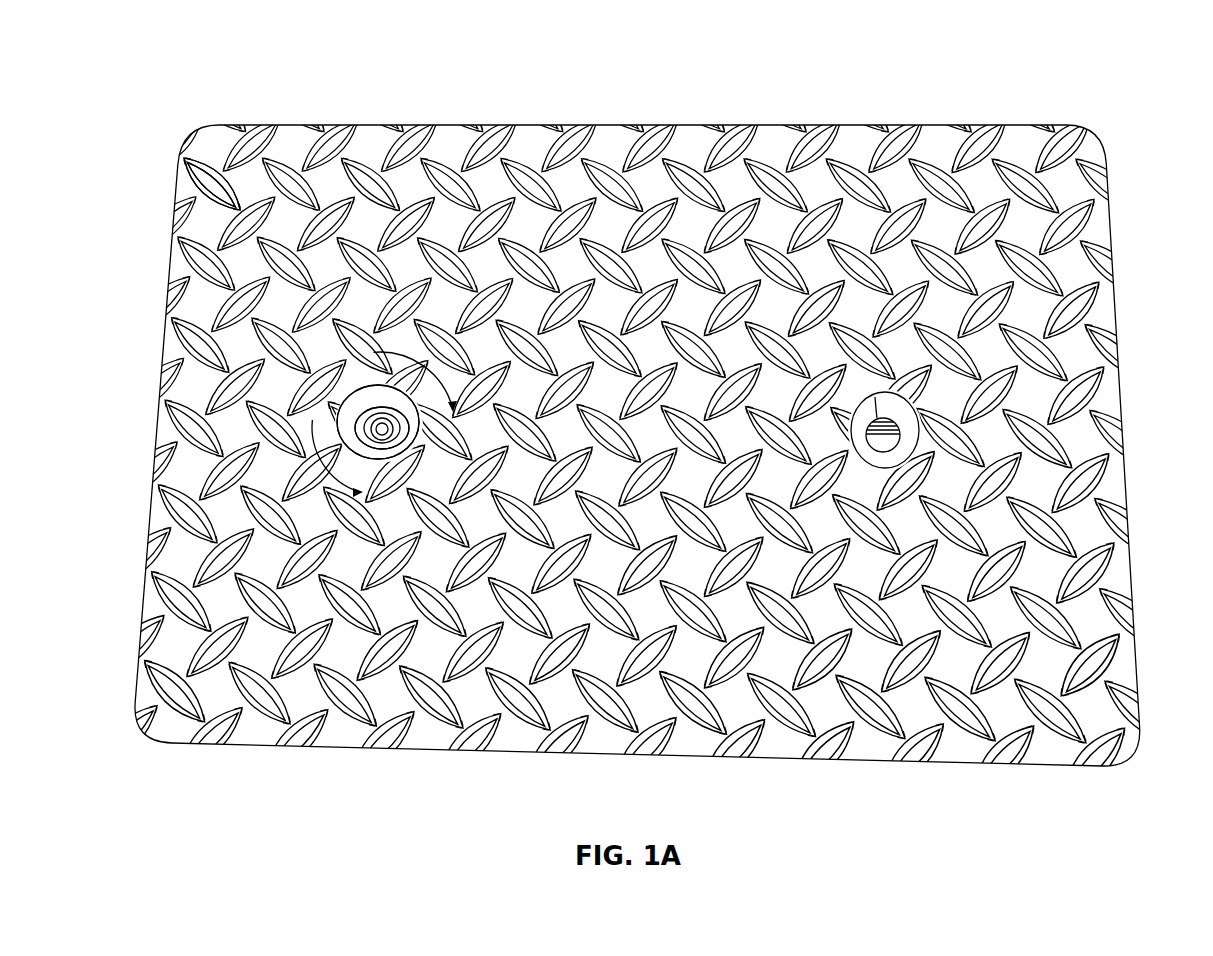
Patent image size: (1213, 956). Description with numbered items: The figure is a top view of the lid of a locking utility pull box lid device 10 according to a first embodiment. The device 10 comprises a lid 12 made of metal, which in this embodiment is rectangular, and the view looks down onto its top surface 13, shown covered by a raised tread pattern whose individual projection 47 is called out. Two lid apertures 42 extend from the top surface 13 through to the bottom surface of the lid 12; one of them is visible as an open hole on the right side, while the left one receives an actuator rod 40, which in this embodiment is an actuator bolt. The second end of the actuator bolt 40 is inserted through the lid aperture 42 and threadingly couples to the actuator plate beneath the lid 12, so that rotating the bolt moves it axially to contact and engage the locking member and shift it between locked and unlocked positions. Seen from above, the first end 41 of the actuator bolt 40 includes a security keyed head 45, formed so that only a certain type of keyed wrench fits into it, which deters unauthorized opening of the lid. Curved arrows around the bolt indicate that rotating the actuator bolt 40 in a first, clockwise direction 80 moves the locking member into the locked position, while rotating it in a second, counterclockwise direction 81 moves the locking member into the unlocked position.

The locking utility pull box lid device 10 is at (1080, 78).
The lid 12 is at (1113, 233).
The top surface 13 is at (705, 227).
The raised tread projection 47 is at (350, 335).
The actuator rod 40 is at (363, 408).
The first end 41 is at (373, 483).
The security keyed head 45 is at (400, 460).
The first (clockwise) direction 80 is at (437, 368).
The second (counterclockwise) direction 81 is at (316, 468).
The lid aperture 42 is at (867, 397).